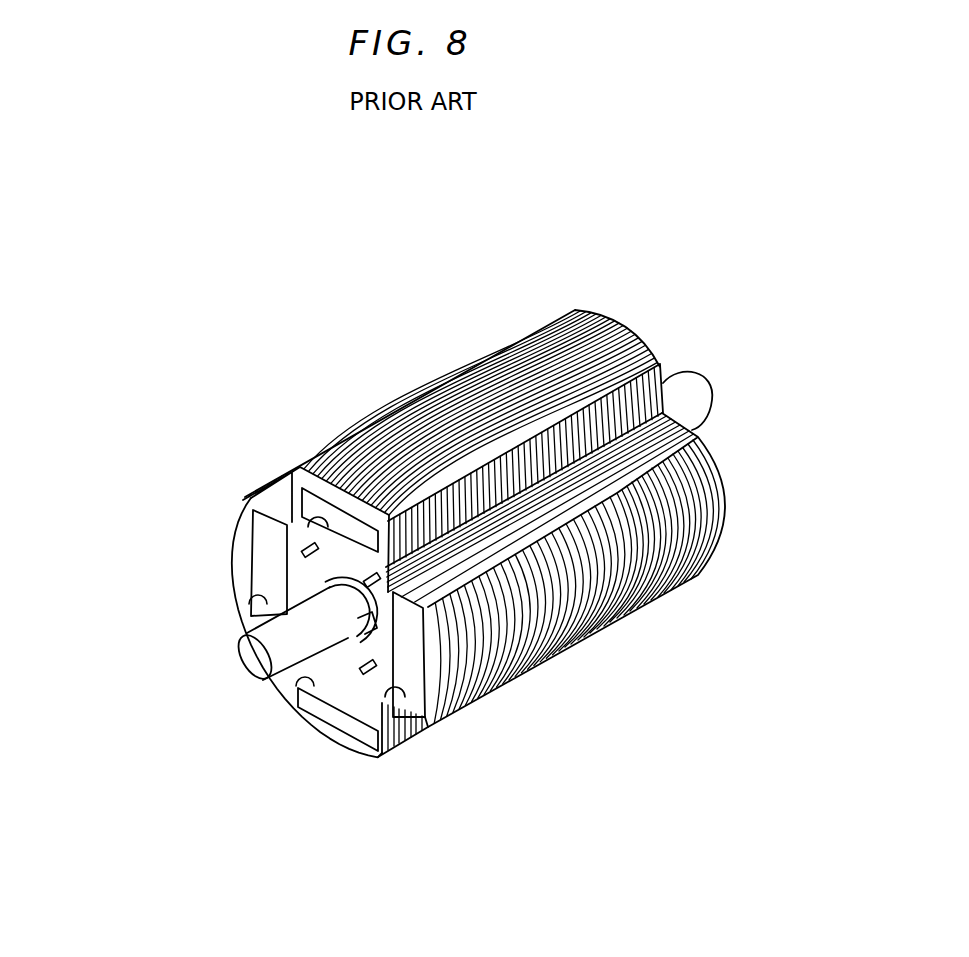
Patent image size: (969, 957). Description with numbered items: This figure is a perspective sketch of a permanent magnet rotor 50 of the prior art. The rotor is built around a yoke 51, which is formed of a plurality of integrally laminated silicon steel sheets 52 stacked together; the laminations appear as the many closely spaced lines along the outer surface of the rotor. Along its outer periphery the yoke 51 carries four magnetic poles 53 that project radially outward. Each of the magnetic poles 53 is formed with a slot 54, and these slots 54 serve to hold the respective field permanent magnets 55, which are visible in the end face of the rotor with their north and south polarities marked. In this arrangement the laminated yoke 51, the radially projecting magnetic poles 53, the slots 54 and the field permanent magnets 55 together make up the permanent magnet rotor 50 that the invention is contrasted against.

The permanent magnet rotor 50 is at (630, 212).
The yoke 51 is at (548, 313).
The silicon steel sheets 52 is at (642, 592).
The magnetic poles 53 is at (637, 338).
The slots 54 is at (258, 604).
The field permanent magnets 55 is at (282, 480).